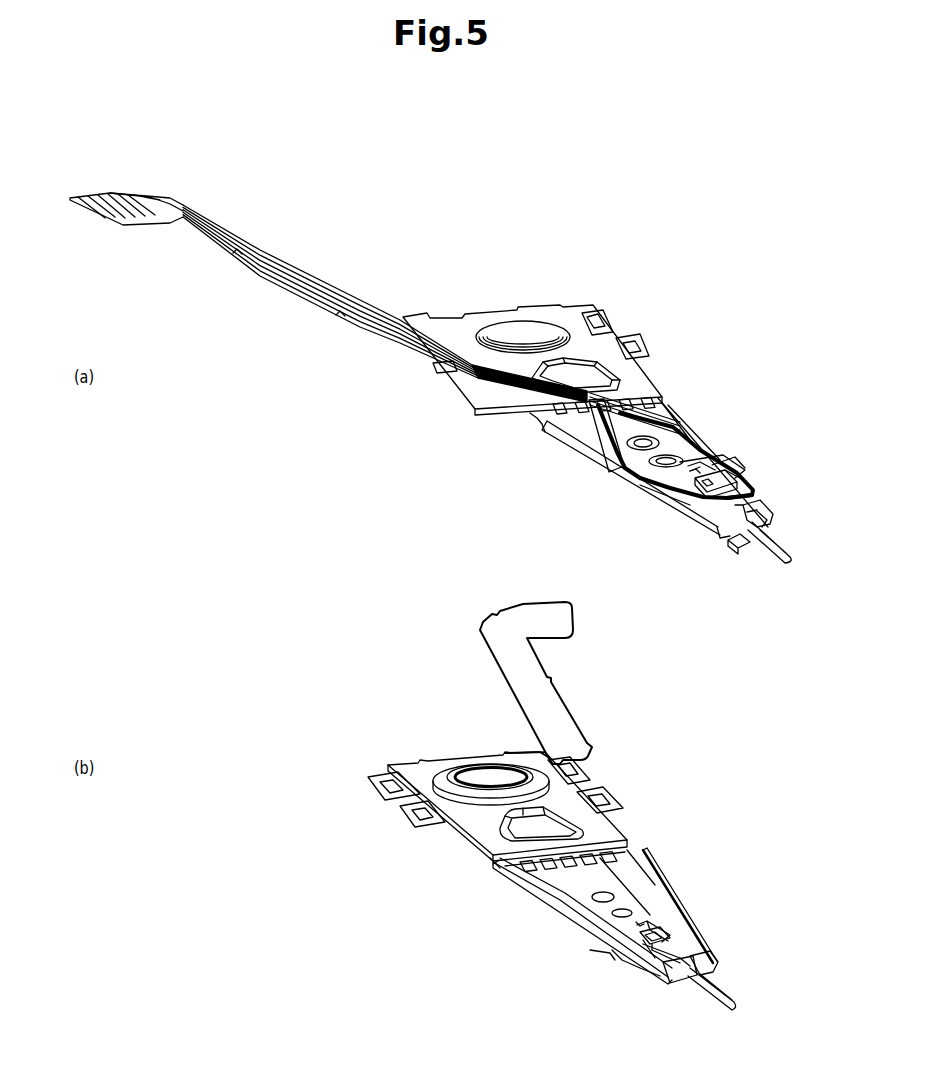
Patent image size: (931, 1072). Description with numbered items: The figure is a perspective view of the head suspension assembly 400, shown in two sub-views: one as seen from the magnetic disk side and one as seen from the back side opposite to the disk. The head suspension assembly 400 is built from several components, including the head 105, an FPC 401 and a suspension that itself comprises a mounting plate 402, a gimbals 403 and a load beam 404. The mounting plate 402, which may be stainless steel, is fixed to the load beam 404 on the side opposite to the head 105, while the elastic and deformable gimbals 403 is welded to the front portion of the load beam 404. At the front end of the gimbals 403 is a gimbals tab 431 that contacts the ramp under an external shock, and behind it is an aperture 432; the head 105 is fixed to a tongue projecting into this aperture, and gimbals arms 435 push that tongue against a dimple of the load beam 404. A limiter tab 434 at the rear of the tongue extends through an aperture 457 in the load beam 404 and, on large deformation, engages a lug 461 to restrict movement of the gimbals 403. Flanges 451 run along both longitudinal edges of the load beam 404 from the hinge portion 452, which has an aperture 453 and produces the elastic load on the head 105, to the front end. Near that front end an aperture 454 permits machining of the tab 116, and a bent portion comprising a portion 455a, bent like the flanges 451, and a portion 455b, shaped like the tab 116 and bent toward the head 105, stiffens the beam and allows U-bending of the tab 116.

The head suspension assembly 400 is at (453, 232).
The FPC (Flexible Printed Circuit) 401 is at (327, 280).
The mounting plate 402 is at (553, 300).
The gimbals 403 is at (723, 455).
The load beam 404 is at (683, 420).
The gimbals tab 431 is at (730, 477).
The aperture 432 is at (700, 473).
The gimbals arms 435 is at (613, 468).
The head 105 is at (660, 497).
The flanges 451 is at (573, 447).
The hinge portion 452 is at (530, 437).
The aperture 453 is at (647, 393).
The aperture 454 is at (747, 520).
The portion of bent portion 455a is at (748, 538).
The portion of bent portion 455b is at (767, 520).
The tab 116 is at (780, 560).
The lug 461 is at (647, 927).
The limiter tab 434 is at (663, 933).
The aperture 457 is at (667, 937).